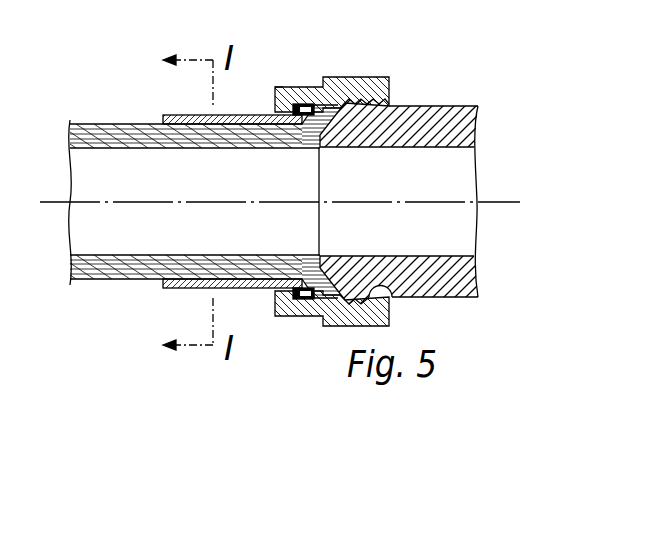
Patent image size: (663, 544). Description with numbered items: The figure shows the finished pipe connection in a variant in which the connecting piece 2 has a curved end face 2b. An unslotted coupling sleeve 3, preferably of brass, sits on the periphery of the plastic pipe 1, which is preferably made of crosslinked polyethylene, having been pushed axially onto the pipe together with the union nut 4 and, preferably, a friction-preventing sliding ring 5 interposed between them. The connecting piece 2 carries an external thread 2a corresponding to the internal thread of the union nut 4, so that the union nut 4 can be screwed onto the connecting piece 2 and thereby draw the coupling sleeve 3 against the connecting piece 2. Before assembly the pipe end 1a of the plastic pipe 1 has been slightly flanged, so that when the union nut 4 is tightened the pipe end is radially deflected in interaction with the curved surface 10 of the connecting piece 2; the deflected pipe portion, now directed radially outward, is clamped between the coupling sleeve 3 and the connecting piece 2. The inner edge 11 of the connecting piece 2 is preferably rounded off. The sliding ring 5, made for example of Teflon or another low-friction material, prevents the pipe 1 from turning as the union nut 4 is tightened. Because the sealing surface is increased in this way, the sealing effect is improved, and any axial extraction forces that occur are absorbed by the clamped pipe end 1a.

The plastic pipe 1 is at (127, 276).
The pipe end 1a is at (276, 297).
The connecting piece 2 is at (468, 280).
The external thread 2a is at (400, 290).
The curved end face 2b is at (330, 136).
The coupling sleeve 3 is at (163, 290).
The union nut 4 is at (343, 327).
The sliding ring 5 is at (284, 87).
The curved surface 10 is at (296, 298).
The inner edge 11 is at (326, 257).